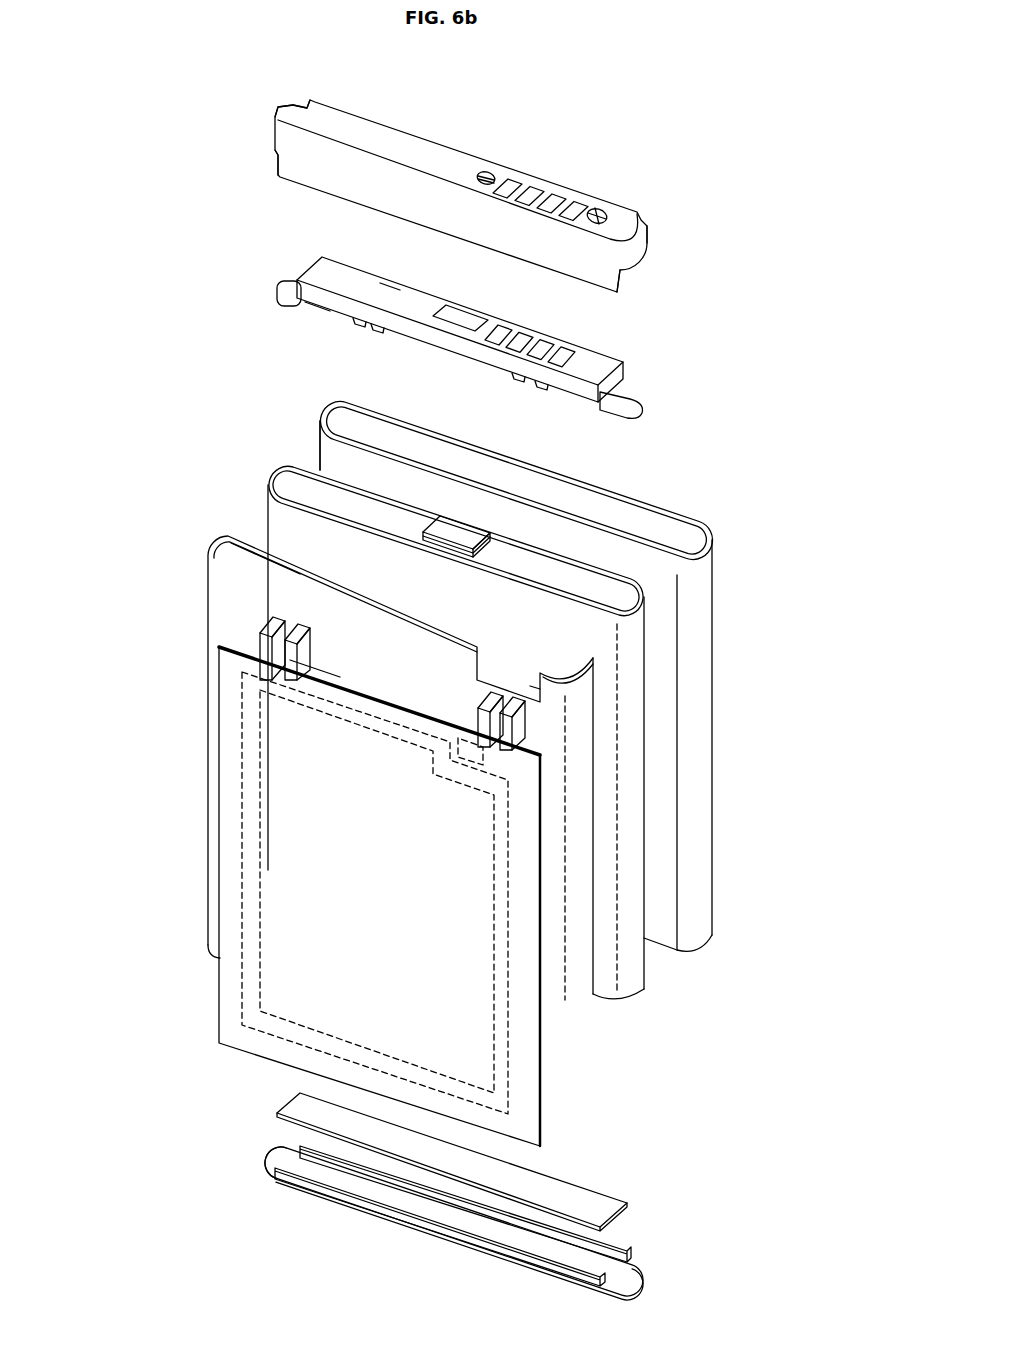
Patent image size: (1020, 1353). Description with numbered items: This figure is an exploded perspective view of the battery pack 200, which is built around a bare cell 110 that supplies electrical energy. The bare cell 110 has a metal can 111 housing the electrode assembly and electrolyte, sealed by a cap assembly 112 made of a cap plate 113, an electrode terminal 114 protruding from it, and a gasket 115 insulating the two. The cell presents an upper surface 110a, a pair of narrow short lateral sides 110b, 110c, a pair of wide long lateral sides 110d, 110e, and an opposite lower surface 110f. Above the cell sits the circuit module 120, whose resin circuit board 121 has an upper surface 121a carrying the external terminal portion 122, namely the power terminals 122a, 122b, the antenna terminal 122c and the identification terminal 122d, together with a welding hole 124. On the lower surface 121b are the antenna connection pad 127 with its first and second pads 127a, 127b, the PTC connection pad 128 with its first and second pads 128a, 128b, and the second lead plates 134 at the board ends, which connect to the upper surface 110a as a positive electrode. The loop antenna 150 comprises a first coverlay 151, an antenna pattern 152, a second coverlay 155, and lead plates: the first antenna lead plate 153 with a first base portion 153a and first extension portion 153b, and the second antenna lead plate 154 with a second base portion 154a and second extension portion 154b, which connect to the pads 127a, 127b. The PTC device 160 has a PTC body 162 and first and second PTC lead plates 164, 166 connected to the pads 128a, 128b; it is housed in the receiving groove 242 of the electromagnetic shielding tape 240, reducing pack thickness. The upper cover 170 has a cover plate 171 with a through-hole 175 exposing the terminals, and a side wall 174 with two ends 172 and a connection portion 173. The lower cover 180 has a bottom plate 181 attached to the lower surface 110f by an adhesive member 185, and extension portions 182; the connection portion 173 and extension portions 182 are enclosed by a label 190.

The battery pack 200 is at (716, 92).
The upper cover 170 is at (628, 193).
The cover plate 171 is at (400, 142).
The ends 172 is at (277, 118).
The connection portion 173 is at (621, 278).
The side wall 174 is at (290, 141).
The through-hole 175 is at (525, 173).
The circuit module 120 is at (636, 360).
The circuit board 121 is at (320, 262).
The upper surface of circuit board 121a is at (381, 282).
The lower surface of circuit board 121b is at (328, 308).
The external terminal portion 122 is at (527, 320).
The power terminal 122a is at (567, 341).
The power terminal 122b is at (494, 320).
The antenna terminal 122c is at (540, 337).
The identification (ID) terminal 122d is at (527, 352).
The welding hole 124 is at (452, 310).
The antenna connection pad 127 is at (393, 376).
The first antenna connection pad 127a is at (362, 326).
The second antenna connection pad 127b is at (387, 334).
The PTC connection pad 128 is at (552, 427).
The first PTC connection pad 128a is at (543, 388).
The second PTC connection pad 128b is at (518, 380).
The second lead plates 134 is at (280, 288).
The label 190 is at (713, 626).
The receiving groove 242 is at (530, 692).
The bare cell 110 is at (655, 803).
The upper surface 110a is at (278, 470).
The short lateral side 110b is at (207, 549).
The short lateral side 110c is at (632, 763).
The long lateral side 110d is at (600, 831).
The long lateral side 110e is at (643, 963).
The lower surface 110f is at (630, 999).
The can 111 is at (607, 896).
The cap assembly 112 is at (289, 460).
The cap plate 113 is at (282, 505).
The electrode terminal 114 is at (460, 540).
The gasket 115 is at (420, 545).
The electromagnetic shielding tape 240 is at (300, 587).
The loop antenna 150 is at (215, 769).
The first coverlay 151 is at (371, 702).
The antenna pattern 152 is at (242, 833).
The first antenna lead plate 153 is at (179, 634).
The first base portion 153a is at (283, 640).
The first extension portion 153b is at (263, 620).
The second antenna lead plate 154 is at (191, 663).
The second base portion 154a is at (260, 663).
The second extension portion 154b is at (285, 680).
The second coverlay 155 is at (328, 677).
The PTC device 160 is at (530, 727).
The PTC body 162 is at (470, 742).
The first PTC lead plate 164 is at (515, 695).
The second PTC lead plate 166 is at (488, 697).
The lower cover 180 is at (628, 1283).
The bottom plate 181 is at (266, 1152).
The extension portions 182 is at (327, 1192).
The adhesive member 185 is at (607, 1208).